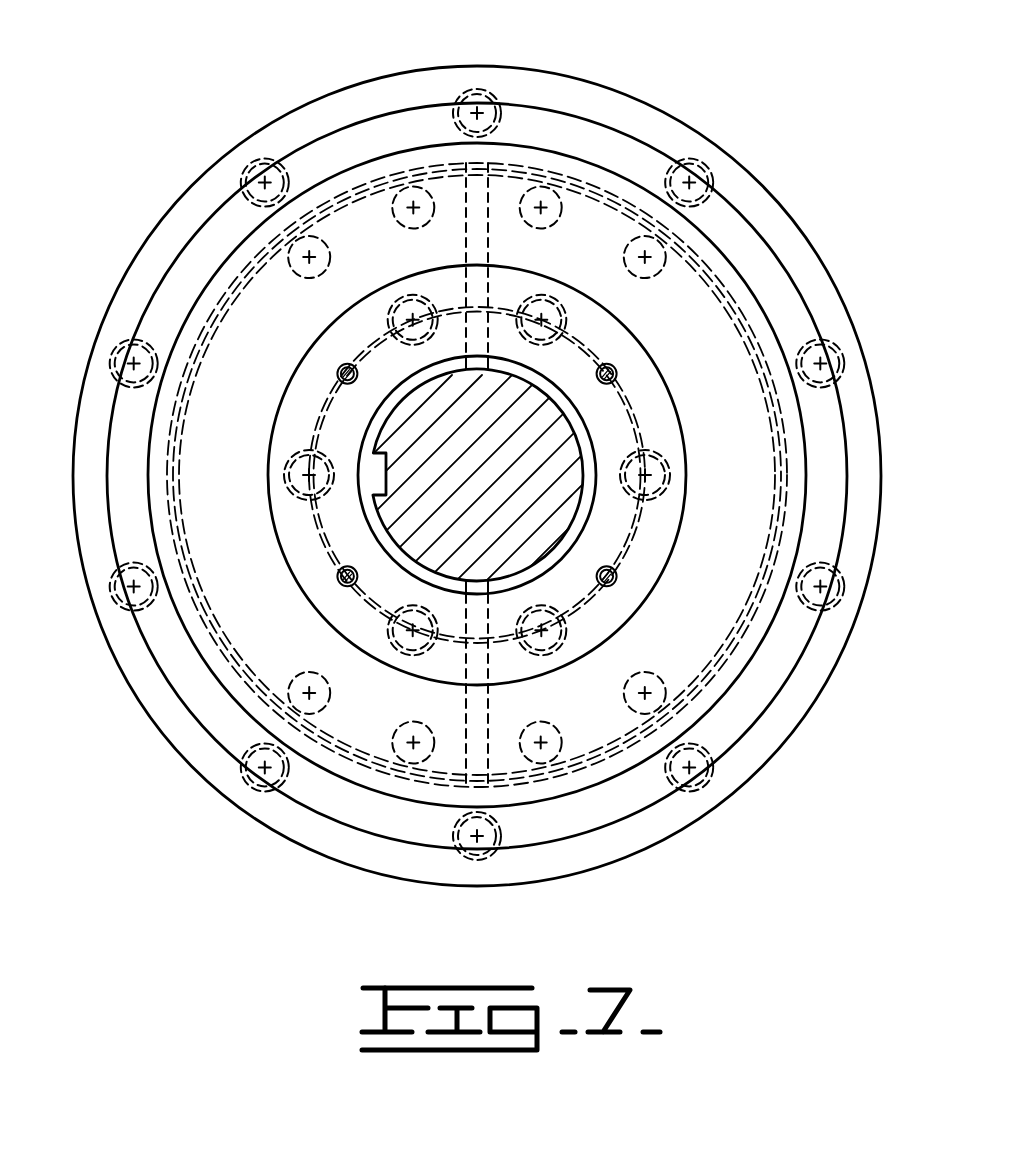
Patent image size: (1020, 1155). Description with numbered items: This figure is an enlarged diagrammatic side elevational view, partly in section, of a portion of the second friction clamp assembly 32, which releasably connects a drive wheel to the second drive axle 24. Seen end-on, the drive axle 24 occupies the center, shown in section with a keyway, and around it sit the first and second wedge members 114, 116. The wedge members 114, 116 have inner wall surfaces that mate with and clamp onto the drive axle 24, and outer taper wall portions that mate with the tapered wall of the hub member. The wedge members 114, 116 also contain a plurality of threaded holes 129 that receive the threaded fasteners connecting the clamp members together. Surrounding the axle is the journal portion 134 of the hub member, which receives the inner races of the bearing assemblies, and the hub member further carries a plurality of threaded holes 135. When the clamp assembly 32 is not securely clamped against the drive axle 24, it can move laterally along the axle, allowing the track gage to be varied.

The second drive axle 24 is at (491, 441).
The second friction clamp assembly 32 is at (278, 858).
The first wedge member 114 is at (718, 328).
The second wedge member 116 is at (182, 493).
The threaded holes 129 is at (430, 302).
The journal portion 134 is at (306, 588).
The threaded holes 135 is at (455, 116).